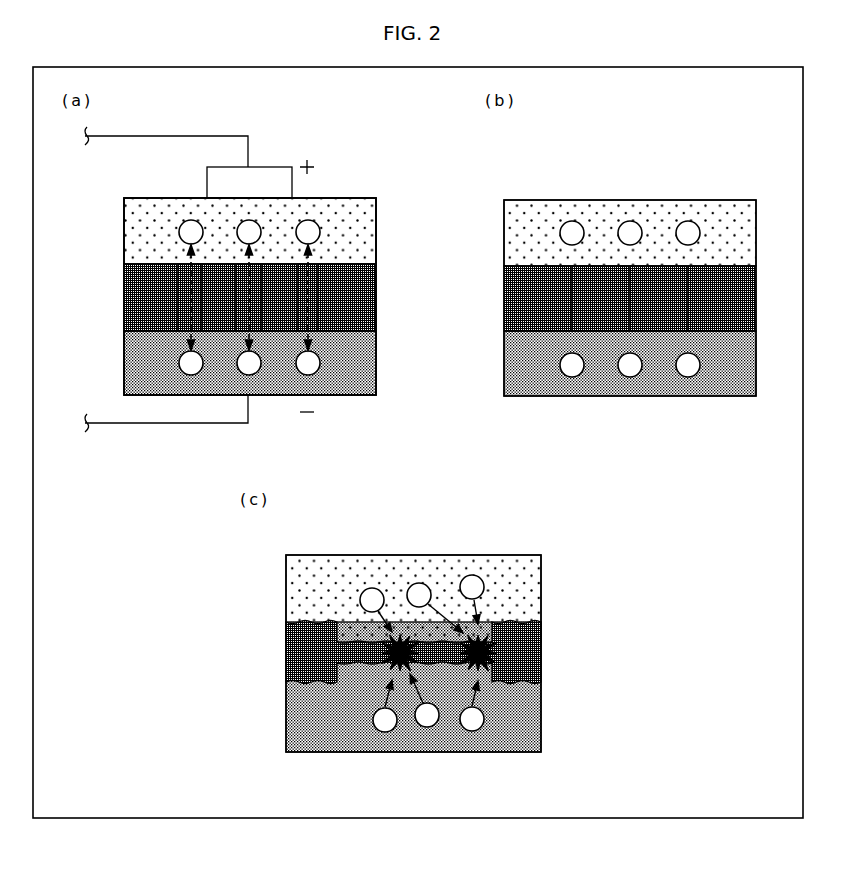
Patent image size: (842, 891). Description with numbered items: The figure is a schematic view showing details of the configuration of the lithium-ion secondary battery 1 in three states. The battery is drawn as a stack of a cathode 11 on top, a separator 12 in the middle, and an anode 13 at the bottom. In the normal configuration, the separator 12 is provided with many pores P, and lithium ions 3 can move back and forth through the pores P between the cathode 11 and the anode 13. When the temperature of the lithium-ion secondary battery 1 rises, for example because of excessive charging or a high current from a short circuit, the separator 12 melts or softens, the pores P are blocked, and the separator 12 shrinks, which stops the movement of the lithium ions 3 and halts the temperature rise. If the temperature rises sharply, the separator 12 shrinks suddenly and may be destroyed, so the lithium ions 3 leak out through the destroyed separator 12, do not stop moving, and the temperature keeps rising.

The lithium-ion secondary battery 1 is at (84, 198).
The lithium ions 3 is at (312, 224).
The cathode 11 is at (126, 233).
The separator 12 is at (126, 299).
The anode 13 is at (126, 363).
The pores P is at (315, 306).